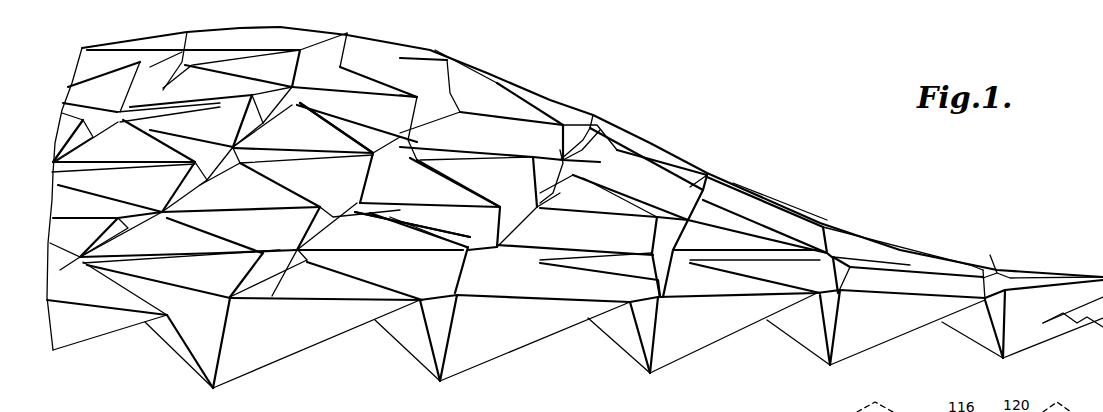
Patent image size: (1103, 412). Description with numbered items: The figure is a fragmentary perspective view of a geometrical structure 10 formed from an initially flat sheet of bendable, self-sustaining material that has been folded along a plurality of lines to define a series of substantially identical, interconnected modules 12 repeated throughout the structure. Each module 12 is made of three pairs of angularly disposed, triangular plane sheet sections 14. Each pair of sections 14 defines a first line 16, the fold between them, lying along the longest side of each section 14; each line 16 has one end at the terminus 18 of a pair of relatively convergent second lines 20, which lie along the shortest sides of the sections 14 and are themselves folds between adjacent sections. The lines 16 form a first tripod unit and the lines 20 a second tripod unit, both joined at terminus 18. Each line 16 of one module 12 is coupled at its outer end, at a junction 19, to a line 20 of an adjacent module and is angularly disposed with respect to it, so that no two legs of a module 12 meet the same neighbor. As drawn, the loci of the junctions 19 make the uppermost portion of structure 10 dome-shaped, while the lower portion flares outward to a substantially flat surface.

The geometrical structure 10 is at (672, 143).
The module 12 is at (382, 156).
The plane sheet section 14 is at (437, 306).
The first line 16 is at (419, 364).
The terminus 18 is at (443, 385).
The junction 19 is at (232, 303).
The second line 20 is at (428, 343).